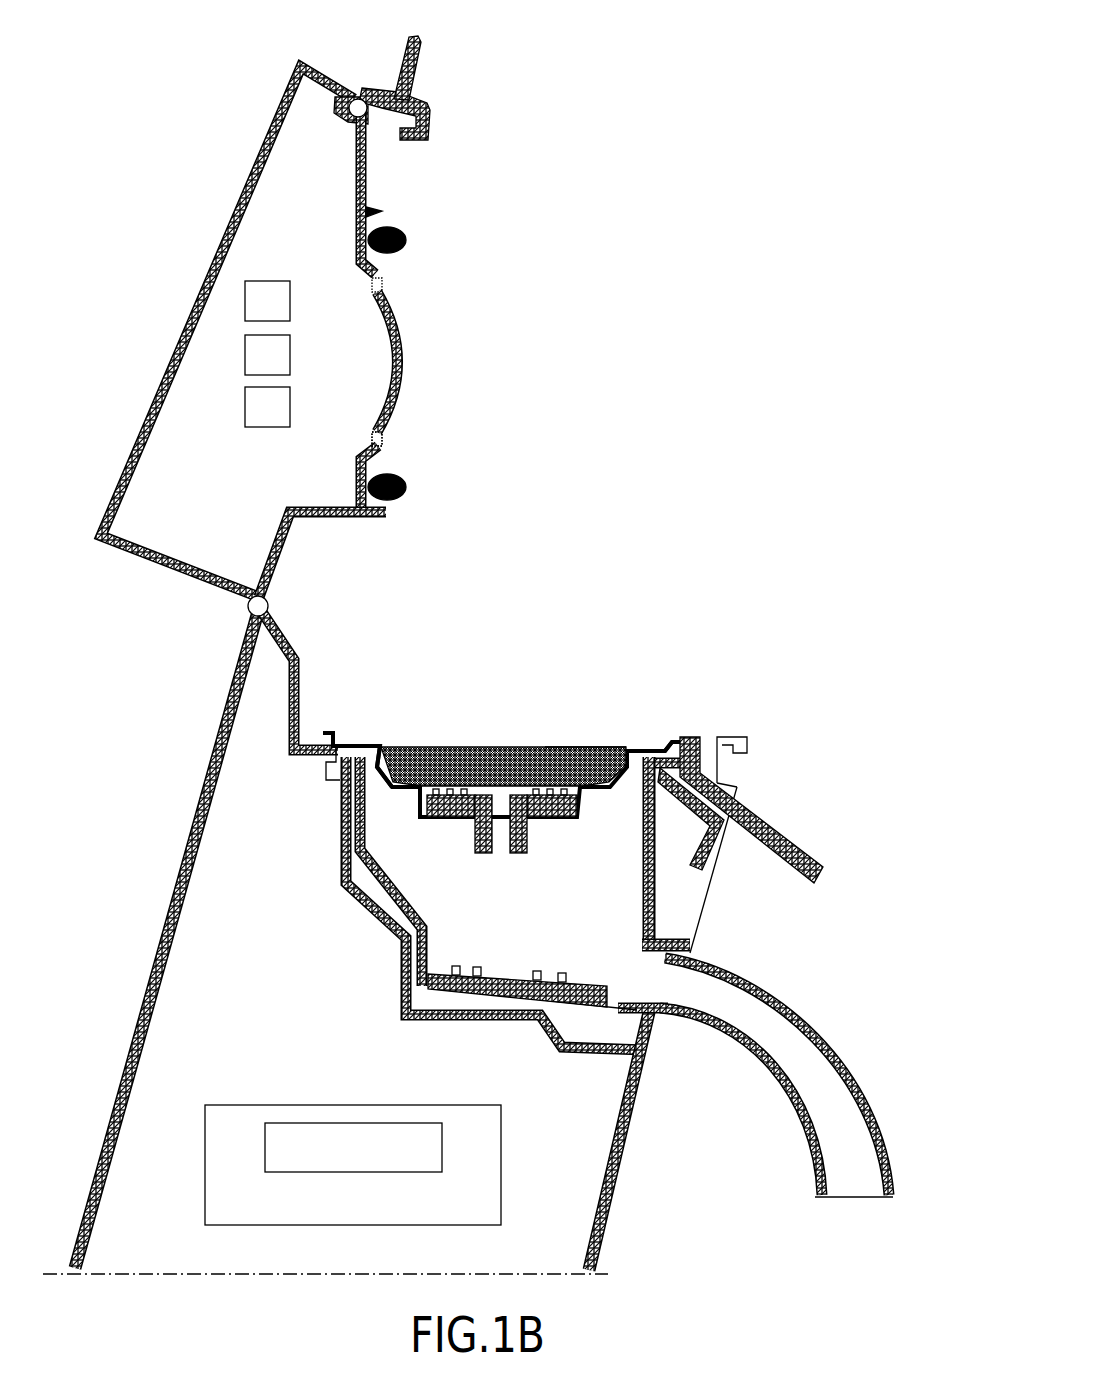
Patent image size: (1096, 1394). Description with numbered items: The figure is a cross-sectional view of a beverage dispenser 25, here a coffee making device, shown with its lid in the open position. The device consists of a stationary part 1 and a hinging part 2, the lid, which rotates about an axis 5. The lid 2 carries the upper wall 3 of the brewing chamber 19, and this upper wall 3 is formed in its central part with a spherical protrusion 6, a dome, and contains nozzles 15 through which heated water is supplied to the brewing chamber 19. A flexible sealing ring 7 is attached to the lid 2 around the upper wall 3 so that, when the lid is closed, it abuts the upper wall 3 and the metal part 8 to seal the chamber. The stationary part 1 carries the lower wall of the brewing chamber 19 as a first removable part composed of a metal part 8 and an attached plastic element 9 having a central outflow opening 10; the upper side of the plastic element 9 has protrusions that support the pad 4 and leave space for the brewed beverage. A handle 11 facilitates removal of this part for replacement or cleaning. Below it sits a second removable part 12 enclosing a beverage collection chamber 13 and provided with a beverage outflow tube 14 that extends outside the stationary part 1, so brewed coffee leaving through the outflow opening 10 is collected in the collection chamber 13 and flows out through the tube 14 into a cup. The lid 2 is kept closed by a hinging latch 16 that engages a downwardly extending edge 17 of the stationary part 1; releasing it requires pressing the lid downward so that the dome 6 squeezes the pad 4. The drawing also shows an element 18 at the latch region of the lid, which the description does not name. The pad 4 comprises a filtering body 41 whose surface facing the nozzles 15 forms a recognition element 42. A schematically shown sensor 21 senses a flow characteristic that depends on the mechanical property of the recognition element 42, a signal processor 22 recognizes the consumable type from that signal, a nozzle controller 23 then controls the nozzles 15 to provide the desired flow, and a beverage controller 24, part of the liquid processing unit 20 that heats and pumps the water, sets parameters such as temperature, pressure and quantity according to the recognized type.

The stationary part 1 is at (138, 1033).
The hinging part 2 is at (200, 287).
The upper wall 3 is at (380, 432).
The pad 4 is at (505, 745).
The axis 5 is at (245, 610).
The spherical protrusion 6 is at (398, 368).
The flexible sealing ring 7 is at (407, 240).
The metal part 8 is at (360, 745).
The plastic element 9 is at (443, 817).
The central outflow opening 10 is at (500, 832).
The handle 11 is at (823, 877).
The second removable part 12 is at (517, 977).
The beverage collection chamber 13 is at (628, 888).
The beverage outflow tube 14 is at (813, 1092).
The nozzles 15 is at (368, 288).
The hinging latch 16 is at (427, 127).
The downwardly extending edge 17 is at (747, 747).
The release lever 18 is at (423, 47).
The brewing chamber 19 is at (387, 763).
The liquid processing unit 20 is at (266, 1105).
The sensor 21 is at (262, 281).
The signal processor 22 is at (245, 350).
The nozzle controller 23 is at (245, 403).
The beverage controller 24 is at (331, 1123).
The beverage dispenser 25 is at (718, 124).
The filtering body 41 is at (627, 748).
The recognition element 42 is at (552, 745).